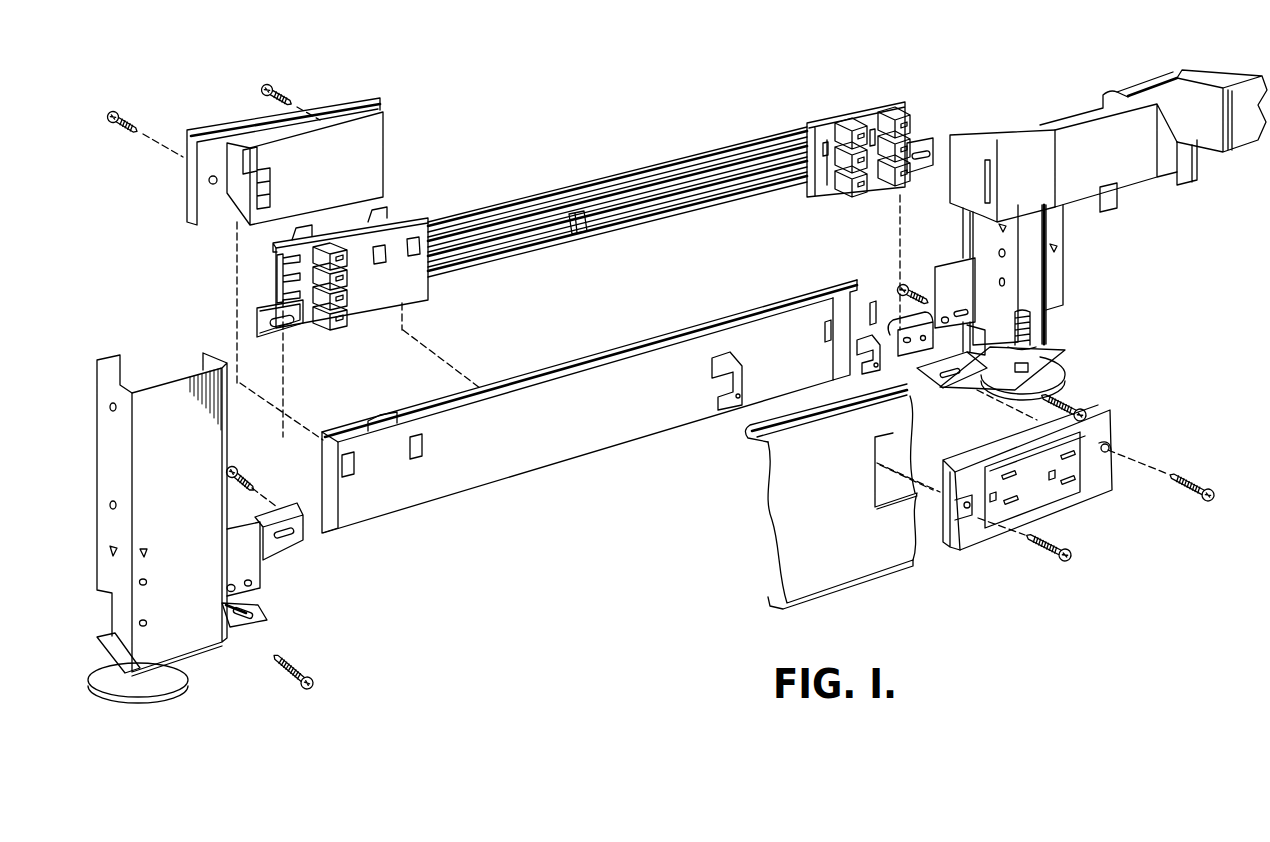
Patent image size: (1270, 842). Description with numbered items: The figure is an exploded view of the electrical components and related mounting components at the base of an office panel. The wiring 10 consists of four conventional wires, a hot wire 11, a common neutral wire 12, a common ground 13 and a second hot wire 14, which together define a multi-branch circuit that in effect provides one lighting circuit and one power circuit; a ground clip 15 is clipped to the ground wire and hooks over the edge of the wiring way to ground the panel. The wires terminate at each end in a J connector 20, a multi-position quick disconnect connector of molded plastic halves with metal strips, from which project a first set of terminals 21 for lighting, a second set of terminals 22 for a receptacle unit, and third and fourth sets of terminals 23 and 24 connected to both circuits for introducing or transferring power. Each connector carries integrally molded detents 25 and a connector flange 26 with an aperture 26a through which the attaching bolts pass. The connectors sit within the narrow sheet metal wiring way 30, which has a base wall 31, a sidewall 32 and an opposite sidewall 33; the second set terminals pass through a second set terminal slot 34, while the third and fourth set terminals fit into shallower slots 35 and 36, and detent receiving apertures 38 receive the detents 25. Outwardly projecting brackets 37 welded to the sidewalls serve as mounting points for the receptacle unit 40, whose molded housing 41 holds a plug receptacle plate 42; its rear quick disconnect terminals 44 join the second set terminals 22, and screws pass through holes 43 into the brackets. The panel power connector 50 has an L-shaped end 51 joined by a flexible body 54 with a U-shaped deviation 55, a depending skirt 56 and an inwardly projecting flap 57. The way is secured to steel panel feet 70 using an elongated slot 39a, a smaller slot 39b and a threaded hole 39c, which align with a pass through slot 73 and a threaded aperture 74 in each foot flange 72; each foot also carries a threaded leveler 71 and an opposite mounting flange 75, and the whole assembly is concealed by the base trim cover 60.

The wiring 10 is at (727, 128).
The hot wire 11 is at (492, 208).
The common neutral wire 12 is at (567, 207).
The common ground wire 13 is at (655, 205).
The hot wire 14 is at (692, 207).
The ground clip 15 is at (588, 234).
The J connector 20 is at (403, 283).
The first set of quick disconnect terminals 21 is at (262, 300).
The second set of quick disconnect terminals 22 is at (845, 188).
The third set of quick disconnect terminals 23 is at (892, 176).
The fourth set of quick disconnect terminals 24 is at (334, 255).
The projecting detents 25 is at (412, 238).
The connector flange 26 is at (583, 234).
The aperture 26a is at (280, 335).
The wiring way 30 is at (604, 439).
The base wall 31 is at (483, 493).
The sidewall 32 is at (668, 392).
The opposite sidewall 33 is at (667, 333).
The second set terminal slot 34 is at (383, 412).
The third set terminal slot 35 is at (613, 437).
The fourth set terminal slot 36 is at (300, 532).
The receptacle mounting bracket 37 is at (737, 402).
The detent receiving aperture 38 is at (356, 468).
The elongated slot 39a is at (262, 612).
The elongated slot 39b is at (907, 344).
The threaded hole 39c is at (924, 342).
The receptacle unit 40 is at (660, 311).
The housing 41 is at (348, 156).
The plug receptacle plate 42 is at (1032, 493).
The holes 43 is at (1110, 448).
The quick disconnect terminals 44 is at (276, 160).
The panel power connector 50 is at (1108, 131).
The L-shaped end 51 is at (1013, 136).
The body 54 is at (1118, 157).
The U-shaped deviation 55 is at (1106, 88).
The skirt 56 is at (1198, 178).
The flap 57 is at (1152, 85).
The base trim cover 60 is at (847, 495).
The panel foot 70 is at (594, 454).
The threaded leveler 71 is at (183, 670).
The flange 72 is at (616, 434).
The pass through slot 73 is at (237, 593).
The threaded aperture 74 is at (253, 583).
The mounting flange 75 is at (1060, 274).